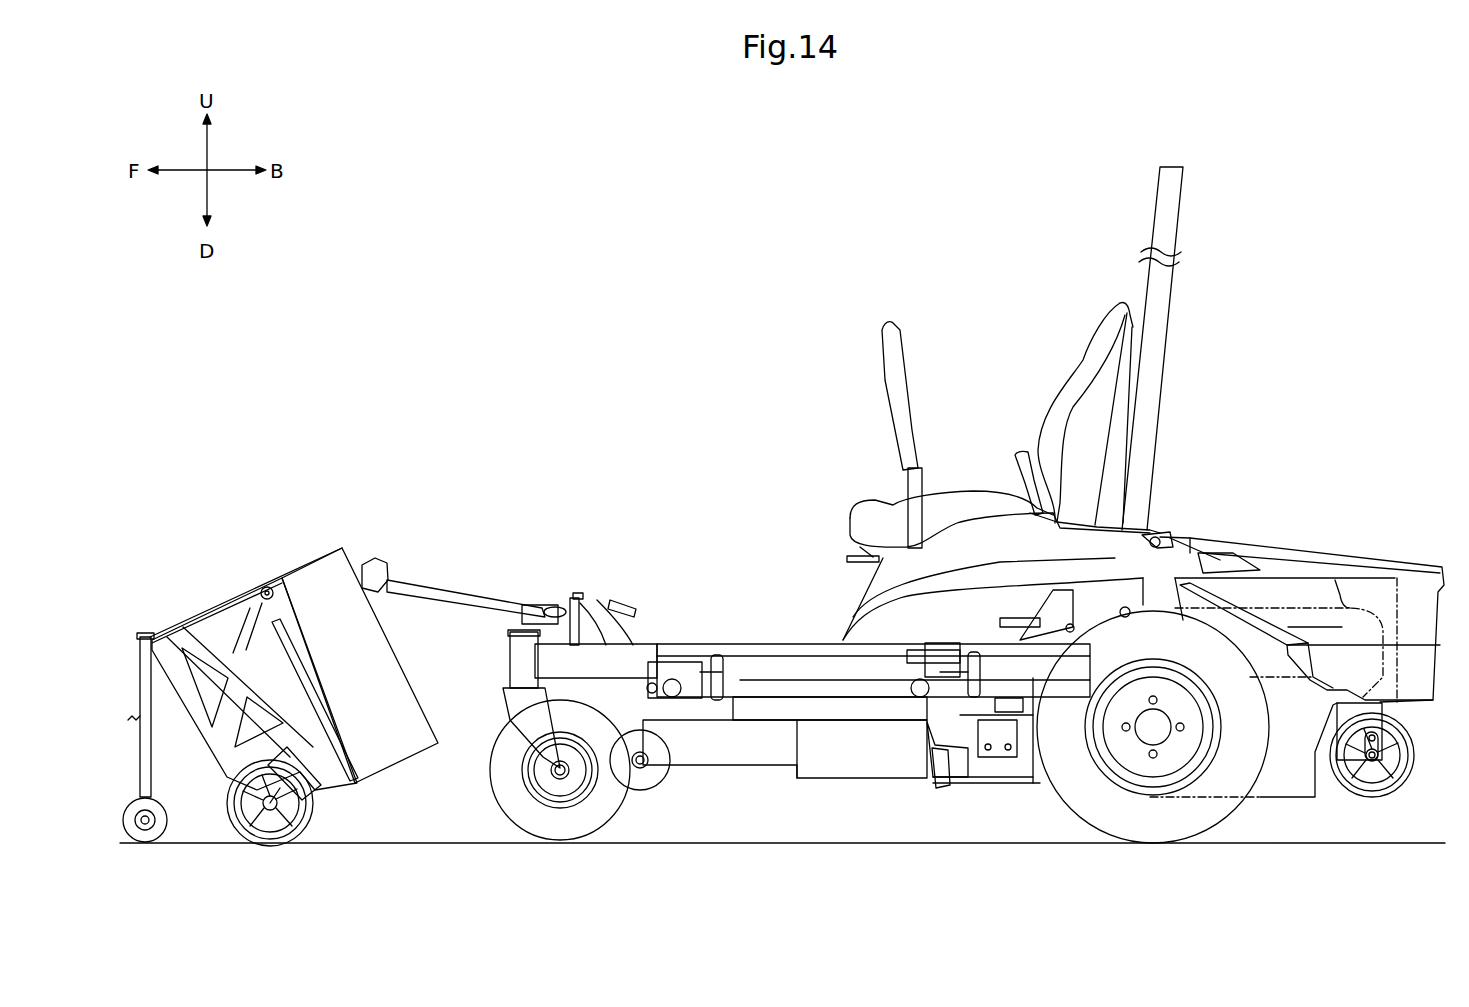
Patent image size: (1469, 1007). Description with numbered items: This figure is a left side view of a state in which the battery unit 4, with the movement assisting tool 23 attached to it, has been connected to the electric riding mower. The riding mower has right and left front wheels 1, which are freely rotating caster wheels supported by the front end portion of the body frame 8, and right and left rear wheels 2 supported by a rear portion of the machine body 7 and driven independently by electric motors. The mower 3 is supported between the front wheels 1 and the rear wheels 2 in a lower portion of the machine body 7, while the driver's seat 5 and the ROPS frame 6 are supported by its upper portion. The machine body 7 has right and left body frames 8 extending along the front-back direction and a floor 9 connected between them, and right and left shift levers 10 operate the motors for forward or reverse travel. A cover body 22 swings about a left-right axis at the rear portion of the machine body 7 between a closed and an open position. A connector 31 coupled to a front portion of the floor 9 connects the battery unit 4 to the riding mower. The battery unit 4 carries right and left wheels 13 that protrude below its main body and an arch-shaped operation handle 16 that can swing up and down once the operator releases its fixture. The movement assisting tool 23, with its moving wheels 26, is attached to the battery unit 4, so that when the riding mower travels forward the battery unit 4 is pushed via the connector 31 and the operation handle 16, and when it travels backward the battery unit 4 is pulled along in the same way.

The front wheels 1 is at (562, 815).
The rear wheels 2 is at (1152, 813).
The mower 3 is at (875, 745).
The battery unit 4 is at (232, 598).
The driver's seat 5 is at (1068, 393).
The ROPS frame 6 is at (1160, 312).
The machine body 7 is at (733, 630).
The body frames 8 is at (792, 668).
The floor 9 is at (598, 602).
The shift levers 10 is at (892, 330).
The wheels 13 is at (267, 806).
The operation handle 16 is at (452, 598).
The cover body 22 is at (1415, 677).
The movement assisting tool 23 is at (152, 727).
The moving wheels 26 is at (163, 824).
The connector 31 is at (545, 601).